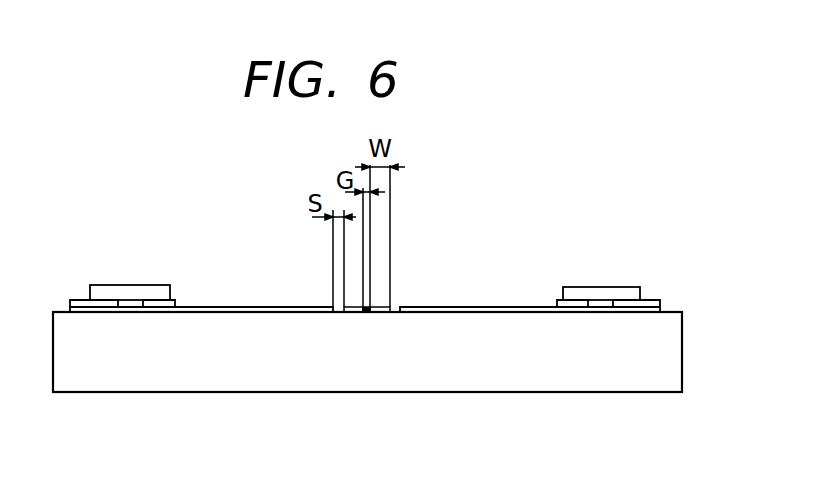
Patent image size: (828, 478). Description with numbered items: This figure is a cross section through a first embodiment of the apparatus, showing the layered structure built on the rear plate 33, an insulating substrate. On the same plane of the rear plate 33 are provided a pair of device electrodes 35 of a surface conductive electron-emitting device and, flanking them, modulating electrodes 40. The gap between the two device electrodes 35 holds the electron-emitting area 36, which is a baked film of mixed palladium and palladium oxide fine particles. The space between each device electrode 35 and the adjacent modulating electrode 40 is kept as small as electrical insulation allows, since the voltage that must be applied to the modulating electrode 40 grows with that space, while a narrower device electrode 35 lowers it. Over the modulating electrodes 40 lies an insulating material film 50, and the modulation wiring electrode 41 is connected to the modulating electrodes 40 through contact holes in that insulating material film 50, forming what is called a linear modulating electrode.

The rear plate 33 is at (672, 340).
The modulating electrode 40 is at (495, 307).
The insulating material film 50 is at (173, 303).
The modulation wiring electrode 41 is at (595, 292).
The device electrode 35 is at (352, 305).
The electron-emitting area 36 is at (368, 305).